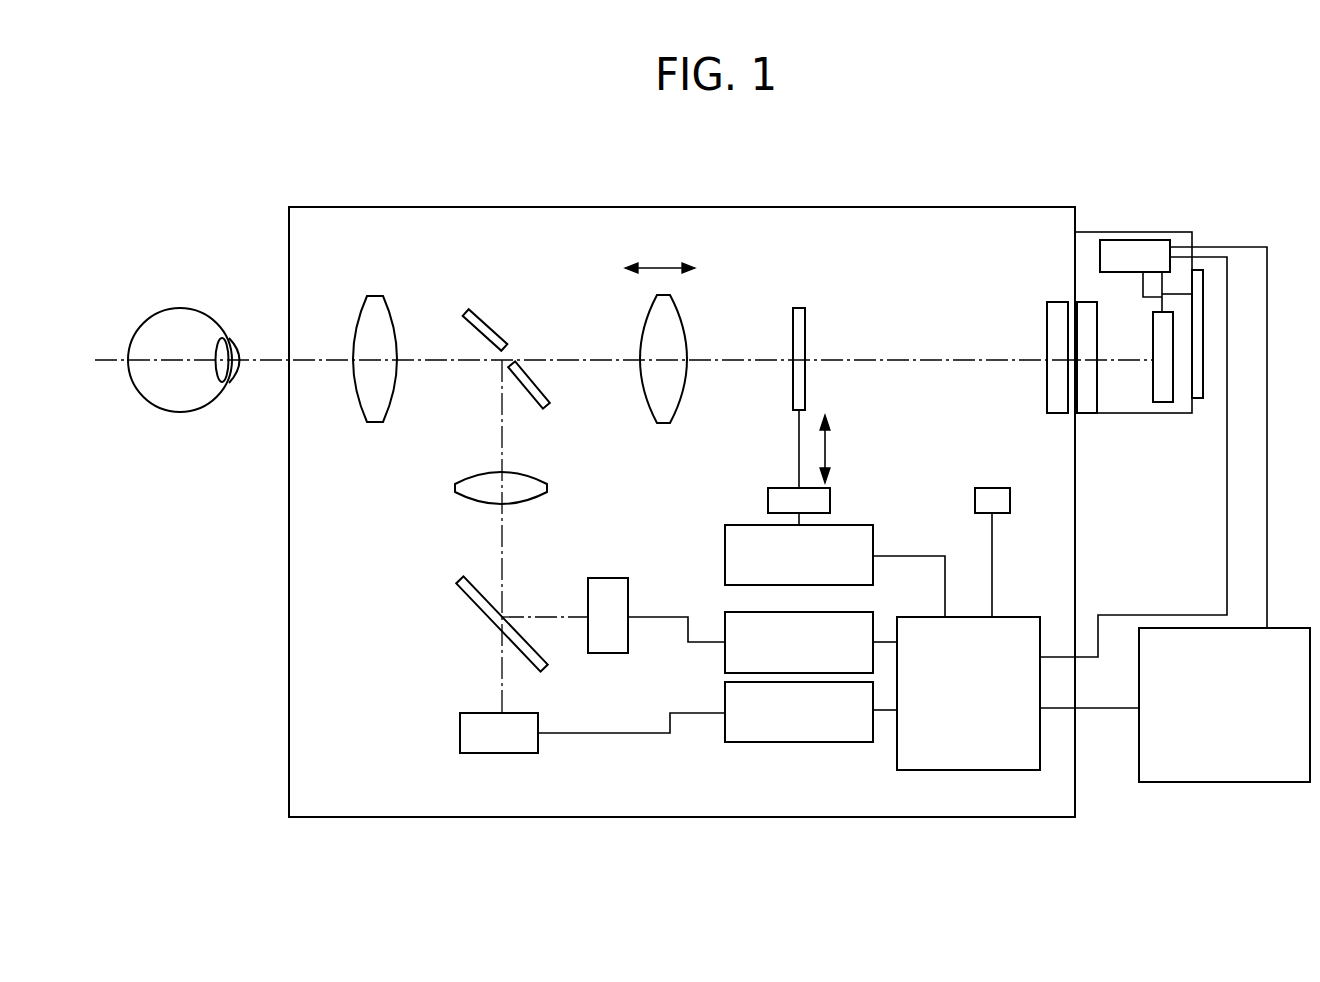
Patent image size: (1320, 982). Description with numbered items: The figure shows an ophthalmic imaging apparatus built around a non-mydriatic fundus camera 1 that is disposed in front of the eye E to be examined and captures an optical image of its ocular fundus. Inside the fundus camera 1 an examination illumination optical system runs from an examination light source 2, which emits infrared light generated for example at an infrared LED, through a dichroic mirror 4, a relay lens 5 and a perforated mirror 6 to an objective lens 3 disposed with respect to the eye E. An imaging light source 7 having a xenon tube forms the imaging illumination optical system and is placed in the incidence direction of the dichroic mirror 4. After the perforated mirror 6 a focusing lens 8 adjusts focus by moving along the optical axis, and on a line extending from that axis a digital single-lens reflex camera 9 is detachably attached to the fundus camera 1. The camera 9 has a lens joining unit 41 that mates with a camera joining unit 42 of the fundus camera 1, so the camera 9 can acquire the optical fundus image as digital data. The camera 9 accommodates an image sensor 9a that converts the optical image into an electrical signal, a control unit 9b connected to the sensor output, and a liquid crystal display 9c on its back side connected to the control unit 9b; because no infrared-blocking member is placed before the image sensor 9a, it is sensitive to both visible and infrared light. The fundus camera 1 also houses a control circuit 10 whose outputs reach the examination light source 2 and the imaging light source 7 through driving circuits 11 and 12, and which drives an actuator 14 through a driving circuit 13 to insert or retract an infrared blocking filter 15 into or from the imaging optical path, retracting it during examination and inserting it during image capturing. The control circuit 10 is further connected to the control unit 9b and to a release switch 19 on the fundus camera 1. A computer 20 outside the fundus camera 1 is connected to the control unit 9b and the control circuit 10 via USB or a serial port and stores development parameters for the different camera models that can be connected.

The fundus camera 1 is at (357, 207).
The eye to be examined E is at (173, 308).
The examination light source 2 is at (460, 735).
The objective lens 3 is at (375, 296).
The dichroic mirror 4 is at (458, 592).
The relay lens 5 is at (455, 490).
The perforated mirror 6 is at (470, 312).
The imaging light source 7 is at (620, 578).
The focusing lens 8 is at (650, 300).
The digital single-lens reflex camera 9 is at (1139, 318).
The image sensor 9a is at (1163, 402).
The control unit 9b is at (1118, 240).
The liquid crystal display 9c is at (1197, 398).
The control circuit 10 is at (897, 743).
The driving circuit 11 is at (728, 744).
The driving circuit 12 is at (727, 612).
The driving circuit 13 is at (853, 525).
The actuator 14 is at (778, 496).
The infrared blocking filter 15 is at (797, 308).
The release switch 19 is at (983, 488).
The computer 20 is at (1225, 782).
The lens joining unit 41 is at (1087, 302).
The camera joining unit 42 is at (1057, 302).